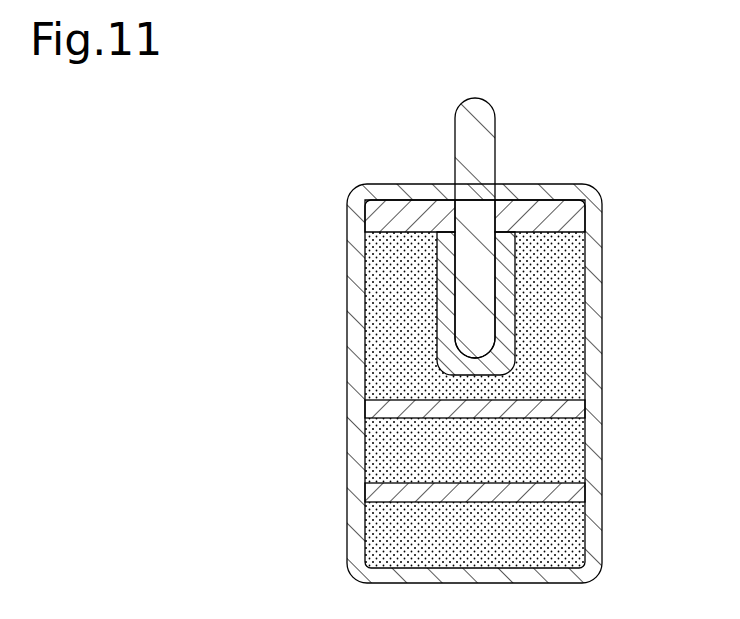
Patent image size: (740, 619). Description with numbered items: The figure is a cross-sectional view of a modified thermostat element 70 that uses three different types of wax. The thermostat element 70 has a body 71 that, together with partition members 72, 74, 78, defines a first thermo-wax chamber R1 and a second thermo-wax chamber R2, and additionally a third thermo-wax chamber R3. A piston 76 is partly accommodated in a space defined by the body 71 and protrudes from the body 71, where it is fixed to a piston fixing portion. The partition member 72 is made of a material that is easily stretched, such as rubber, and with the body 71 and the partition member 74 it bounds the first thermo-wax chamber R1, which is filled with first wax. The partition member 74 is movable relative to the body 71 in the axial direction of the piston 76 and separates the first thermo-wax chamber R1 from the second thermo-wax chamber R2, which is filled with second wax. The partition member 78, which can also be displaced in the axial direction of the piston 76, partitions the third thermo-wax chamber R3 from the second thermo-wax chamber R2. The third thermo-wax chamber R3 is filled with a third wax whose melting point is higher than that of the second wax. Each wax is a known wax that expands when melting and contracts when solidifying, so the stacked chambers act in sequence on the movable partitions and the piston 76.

The thermostat element 70 is at (604, 152).
The body 71 is at (605, 259).
The partition member 72 is at (588, 212).
The partition member 74 is at (568, 403).
The piston 76 is at (492, 111).
The partition member 78 is at (568, 488).
The first thermo-wax chamber R1 is at (560, 364).
The second thermo-wax chamber R2 is at (560, 443).
The third thermo-wax chamber R3 is at (558, 538).